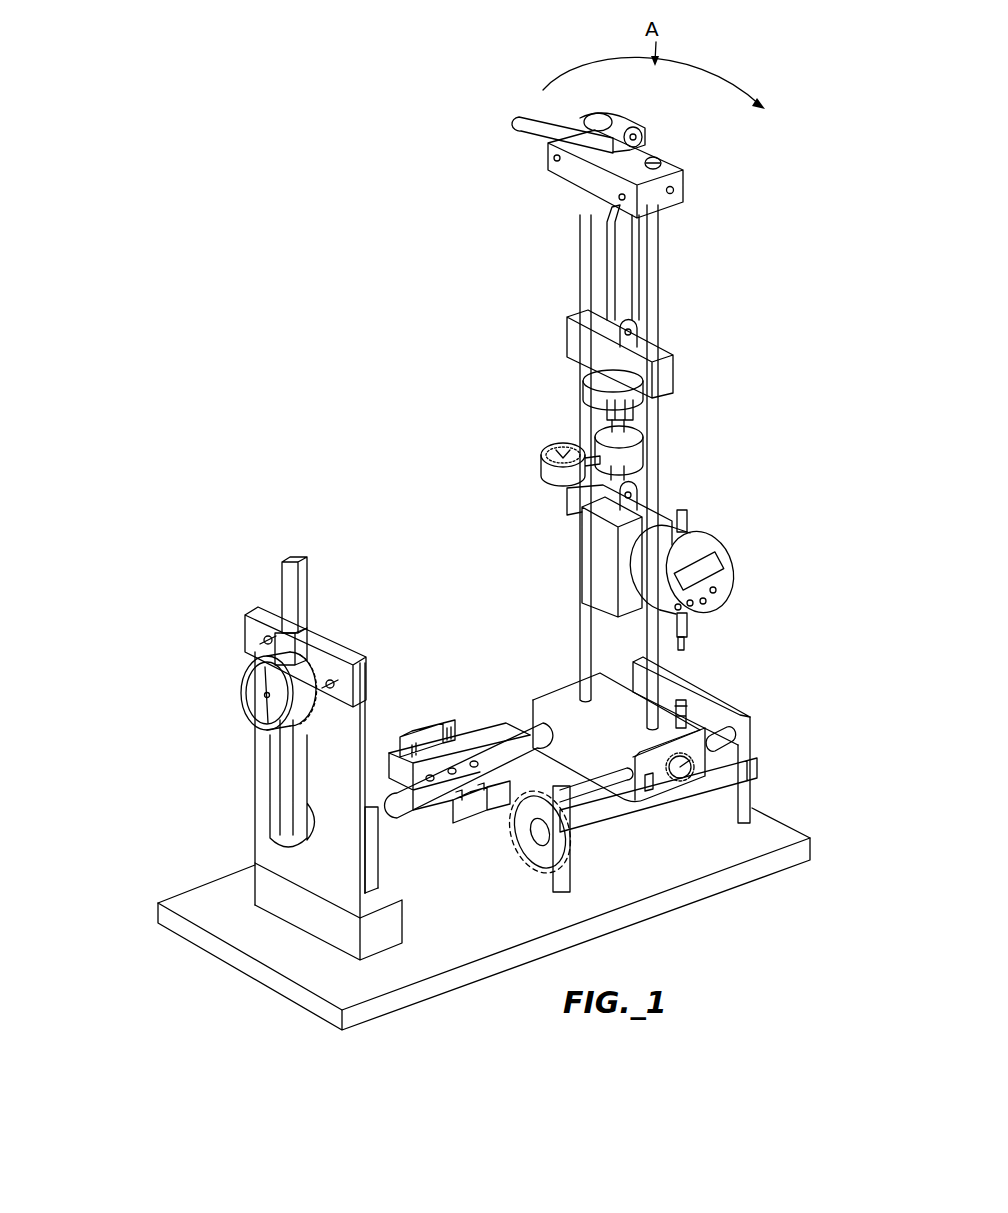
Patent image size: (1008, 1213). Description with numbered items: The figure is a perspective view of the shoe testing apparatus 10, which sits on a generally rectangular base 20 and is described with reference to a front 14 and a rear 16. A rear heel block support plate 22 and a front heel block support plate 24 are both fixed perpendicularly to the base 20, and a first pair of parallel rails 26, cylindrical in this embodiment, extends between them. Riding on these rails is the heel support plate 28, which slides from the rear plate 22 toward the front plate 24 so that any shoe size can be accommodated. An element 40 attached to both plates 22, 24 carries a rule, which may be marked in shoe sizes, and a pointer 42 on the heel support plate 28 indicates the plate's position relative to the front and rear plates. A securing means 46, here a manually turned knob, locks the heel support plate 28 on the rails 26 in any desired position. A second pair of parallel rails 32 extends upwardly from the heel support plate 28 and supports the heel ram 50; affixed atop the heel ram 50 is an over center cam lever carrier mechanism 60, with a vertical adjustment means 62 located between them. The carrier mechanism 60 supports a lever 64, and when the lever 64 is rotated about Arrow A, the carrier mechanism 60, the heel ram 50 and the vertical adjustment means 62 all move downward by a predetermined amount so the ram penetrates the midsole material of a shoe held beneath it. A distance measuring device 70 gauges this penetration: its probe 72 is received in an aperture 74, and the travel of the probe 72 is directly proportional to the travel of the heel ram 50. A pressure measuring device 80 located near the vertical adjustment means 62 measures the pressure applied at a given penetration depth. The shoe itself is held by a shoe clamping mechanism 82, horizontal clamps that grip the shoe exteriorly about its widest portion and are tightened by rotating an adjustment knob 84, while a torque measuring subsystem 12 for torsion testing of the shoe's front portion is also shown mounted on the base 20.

The apparatus 10 is at (415, 400).
The torque measuring subsystem 12 is at (238, 700).
The front 14 is at (326, 834).
The rear 16 is at (728, 696).
The base 20 is at (606, 918).
The rear heel block support plate 22 is at (752, 726).
The front heel block support plate 24 is at (473, 727).
The first pair of parallel rails 26 is at (588, 790).
The heel support plate 28 is at (620, 724).
The second pair of parallel rails 32 is at (578, 630).
The rule element 40 is at (700, 790).
The pointer 42 is at (655, 789).
The securing means 46 is at (665, 762).
The heel ram 50 is at (610, 568).
The over center cam lever carrier mechanism 60 is at (686, 165).
The vertical adjustment means 62 is at (600, 396).
The lever 64 is at (527, 132).
The distance measuring device 70 is at (713, 528).
The probe 72 is at (684, 628).
The aperture 74 is at (723, 693).
The pressure measuring device 80 is at (542, 467).
The shoe clamping mechanism 82 is at (412, 735).
The adjustment knob 84 is at (518, 873).